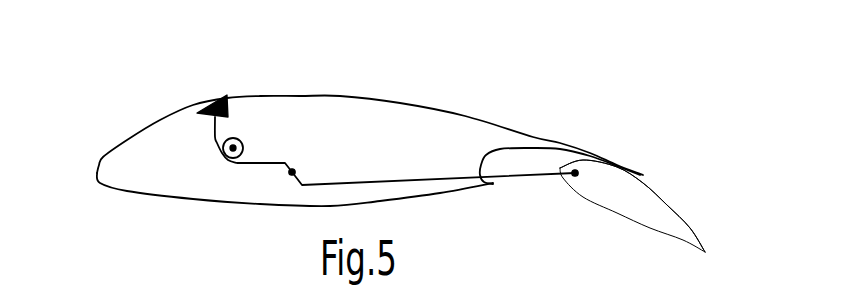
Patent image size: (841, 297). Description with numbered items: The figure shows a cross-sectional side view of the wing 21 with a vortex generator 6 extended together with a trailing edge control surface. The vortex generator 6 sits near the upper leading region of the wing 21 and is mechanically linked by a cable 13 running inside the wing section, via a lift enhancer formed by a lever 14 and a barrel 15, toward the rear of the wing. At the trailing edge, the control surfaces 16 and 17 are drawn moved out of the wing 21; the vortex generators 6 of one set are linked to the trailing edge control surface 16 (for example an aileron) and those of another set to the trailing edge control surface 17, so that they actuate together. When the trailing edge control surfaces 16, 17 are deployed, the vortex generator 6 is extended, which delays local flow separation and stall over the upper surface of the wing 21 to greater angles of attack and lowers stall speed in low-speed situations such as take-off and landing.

The vortex generator 6 is at (210, 105).
The wing 21 is at (340, 96).
The cable 13 is at (213, 135).
The lever 14 is at (295, 168).
The barrel 15 is at (243, 143).
The trailing edge control surface 16 is at (658, 193).
The trailing edge control surface 17 is at (632, 206).